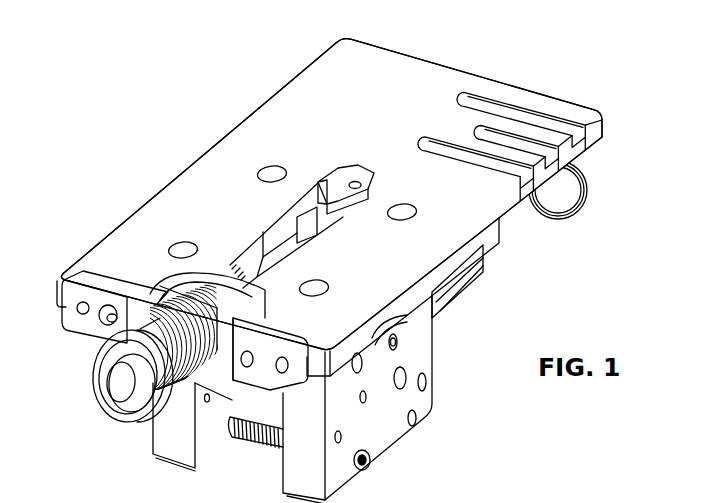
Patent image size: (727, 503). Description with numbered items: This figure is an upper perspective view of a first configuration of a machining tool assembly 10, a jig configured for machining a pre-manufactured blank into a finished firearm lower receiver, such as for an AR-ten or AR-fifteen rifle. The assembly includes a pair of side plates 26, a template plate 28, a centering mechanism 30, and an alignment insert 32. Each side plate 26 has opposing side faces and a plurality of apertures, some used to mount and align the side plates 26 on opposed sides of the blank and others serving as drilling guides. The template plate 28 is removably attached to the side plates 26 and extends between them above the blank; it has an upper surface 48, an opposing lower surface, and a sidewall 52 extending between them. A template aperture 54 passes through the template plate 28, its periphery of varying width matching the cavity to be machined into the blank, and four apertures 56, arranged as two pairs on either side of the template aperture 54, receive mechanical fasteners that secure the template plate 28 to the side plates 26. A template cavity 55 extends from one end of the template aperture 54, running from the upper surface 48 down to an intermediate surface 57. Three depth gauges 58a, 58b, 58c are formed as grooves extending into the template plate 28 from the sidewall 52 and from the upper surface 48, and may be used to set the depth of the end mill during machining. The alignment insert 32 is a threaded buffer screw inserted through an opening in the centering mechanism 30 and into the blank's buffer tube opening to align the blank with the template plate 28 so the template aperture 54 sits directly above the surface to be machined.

The machining tool assembly 10 is at (140, 111).
The side plates 26 is at (158, 458).
The template plate 28 is at (392, 75).
The centering mechanism 30 is at (80, 342).
The alignment insert 32 is at (104, 410).
The upper surface 48 is at (347, 98).
The sidewall 52 is at (512, 213).
The template aperture 54 is at (308, 212).
The template cavity 55 is at (341, 172).
The apertures 56 is at (328, 281).
The intermediate surface 57 is at (362, 191).
The depth gauge 58a is at (502, 172).
The depth gauge 58b is at (528, 150).
The depth gauge 58c is at (558, 127).